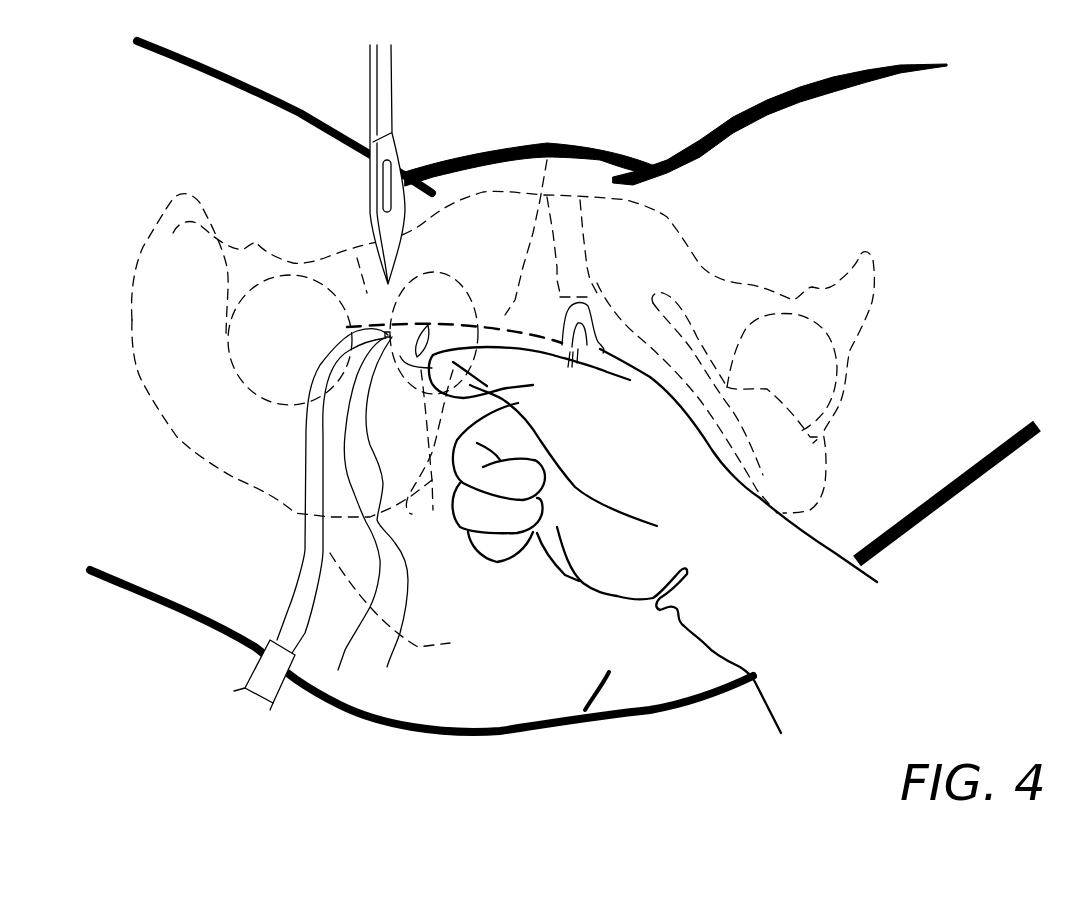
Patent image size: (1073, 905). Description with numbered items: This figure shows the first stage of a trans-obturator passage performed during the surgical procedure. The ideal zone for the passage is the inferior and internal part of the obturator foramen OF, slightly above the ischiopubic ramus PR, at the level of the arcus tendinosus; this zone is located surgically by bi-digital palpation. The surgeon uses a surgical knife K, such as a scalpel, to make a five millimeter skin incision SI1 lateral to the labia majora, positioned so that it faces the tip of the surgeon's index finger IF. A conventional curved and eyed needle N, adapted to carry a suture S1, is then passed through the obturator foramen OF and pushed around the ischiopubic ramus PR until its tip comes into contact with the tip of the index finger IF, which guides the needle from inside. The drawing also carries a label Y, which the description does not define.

The surgical knife K is at (394, 126).
The ischiopubic ramus PR is at (565, 138).
The obturator foramen OF is at (290, 299).
The curved and eyed needle N is at (295, 580).
The index finger IF is at (429, 463).
The suture S1 is at (415, 598).
The skin incision SI1 is at (475, 358).
The thumb loop Y is at (669, 630).